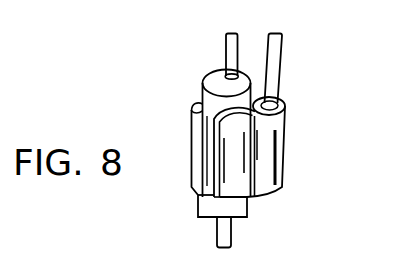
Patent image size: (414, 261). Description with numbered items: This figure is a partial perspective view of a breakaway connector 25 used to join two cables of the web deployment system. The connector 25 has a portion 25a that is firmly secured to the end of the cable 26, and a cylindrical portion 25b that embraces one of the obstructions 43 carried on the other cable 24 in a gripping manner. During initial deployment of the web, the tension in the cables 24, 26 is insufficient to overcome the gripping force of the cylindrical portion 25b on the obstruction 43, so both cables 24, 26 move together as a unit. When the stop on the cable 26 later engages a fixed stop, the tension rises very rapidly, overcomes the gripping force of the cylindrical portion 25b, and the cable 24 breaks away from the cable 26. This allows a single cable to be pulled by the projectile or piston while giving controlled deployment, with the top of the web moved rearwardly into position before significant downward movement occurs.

The cable 24 is at (224, 53).
The cable 26 is at (281, 61).
The obstruction 43 is at (202, 90).
The breakaway connector 25 is at (290, 157).
The portion 25a is at (285, 177).
The cylindrical portion 25b is at (243, 198).